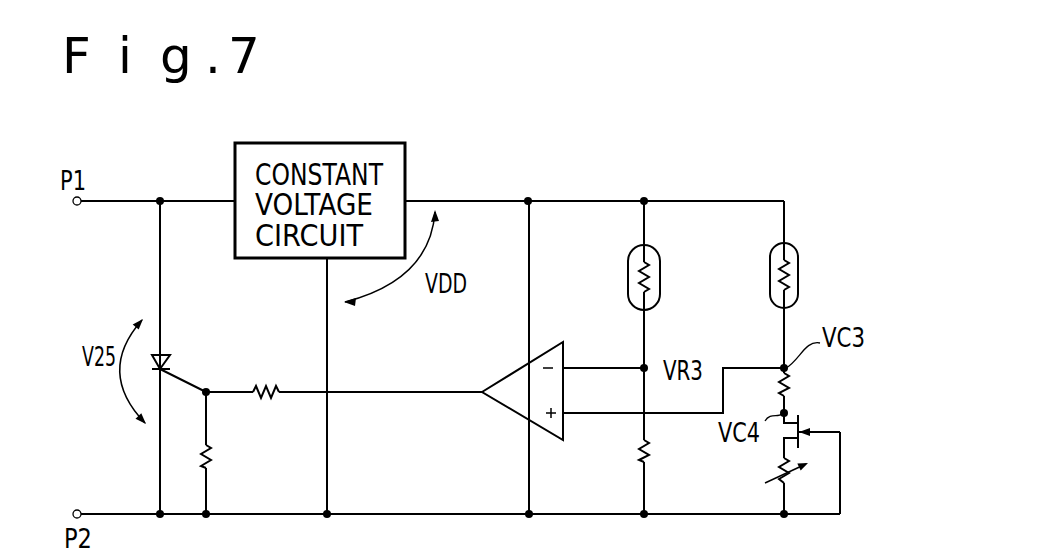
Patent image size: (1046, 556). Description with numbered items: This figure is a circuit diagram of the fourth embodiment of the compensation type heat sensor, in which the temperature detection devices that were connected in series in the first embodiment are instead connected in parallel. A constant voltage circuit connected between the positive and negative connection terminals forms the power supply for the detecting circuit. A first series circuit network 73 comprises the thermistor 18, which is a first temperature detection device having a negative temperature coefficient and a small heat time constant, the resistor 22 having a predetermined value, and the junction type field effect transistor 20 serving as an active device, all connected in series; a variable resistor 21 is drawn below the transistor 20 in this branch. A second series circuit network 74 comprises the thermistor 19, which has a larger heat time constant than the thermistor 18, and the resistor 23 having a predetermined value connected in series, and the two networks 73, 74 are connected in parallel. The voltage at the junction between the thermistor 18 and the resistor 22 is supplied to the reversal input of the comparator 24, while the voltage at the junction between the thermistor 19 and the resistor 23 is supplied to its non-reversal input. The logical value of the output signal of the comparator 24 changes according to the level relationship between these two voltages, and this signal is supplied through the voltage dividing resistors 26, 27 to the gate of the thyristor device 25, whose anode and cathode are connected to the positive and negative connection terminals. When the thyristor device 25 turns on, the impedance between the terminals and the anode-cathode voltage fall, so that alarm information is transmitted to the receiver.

The thermistor device 18 is at (800, 278).
The thermistor device 19 is at (661, 278).
The junction type field effect transistor 20 is at (813, 456).
The variable resistor 21 is at (775, 486).
The resistor 22 is at (798, 390).
The resistor 23 is at (666, 454).
The comparator 24 is at (522, 418).
The thyristor device 25 is at (179, 370).
The voltage dividing resistor 26 is at (266, 374).
The voltage dividing resistor 27 is at (225, 460).
The first series circuit network 73 is at (792, 222).
The second series circuit network 74 is at (664, 200).